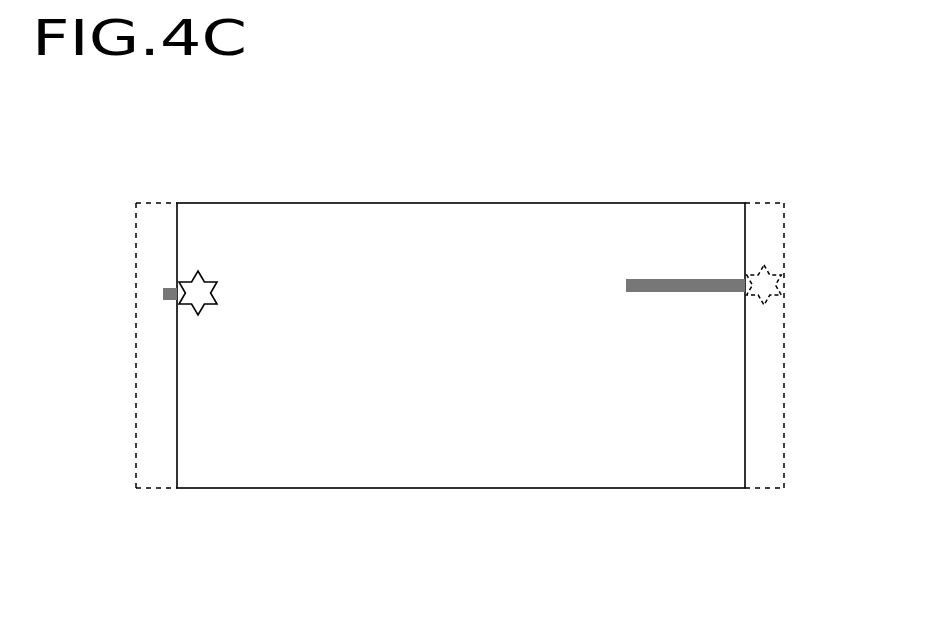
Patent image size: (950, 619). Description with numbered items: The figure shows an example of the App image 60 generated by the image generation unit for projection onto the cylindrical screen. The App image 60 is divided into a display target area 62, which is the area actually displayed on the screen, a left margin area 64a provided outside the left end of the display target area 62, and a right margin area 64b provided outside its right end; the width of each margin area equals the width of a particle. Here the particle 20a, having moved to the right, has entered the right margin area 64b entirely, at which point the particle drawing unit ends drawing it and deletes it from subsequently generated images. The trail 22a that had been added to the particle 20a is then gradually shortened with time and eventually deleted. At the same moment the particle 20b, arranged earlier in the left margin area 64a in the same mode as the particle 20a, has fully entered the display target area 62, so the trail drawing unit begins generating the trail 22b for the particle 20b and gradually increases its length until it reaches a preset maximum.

The App image 60 is at (583, 104).
The display target area 62 is at (463, 188).
The left margin area 64a is at (155, 188).
The right margin area 64b is at (766, 188).
The particle 20a is at (803, 282).
The particle 20b is at (192, 254).
The trail 22a is at (690, 314).
The trail 22b is at (165, 316).